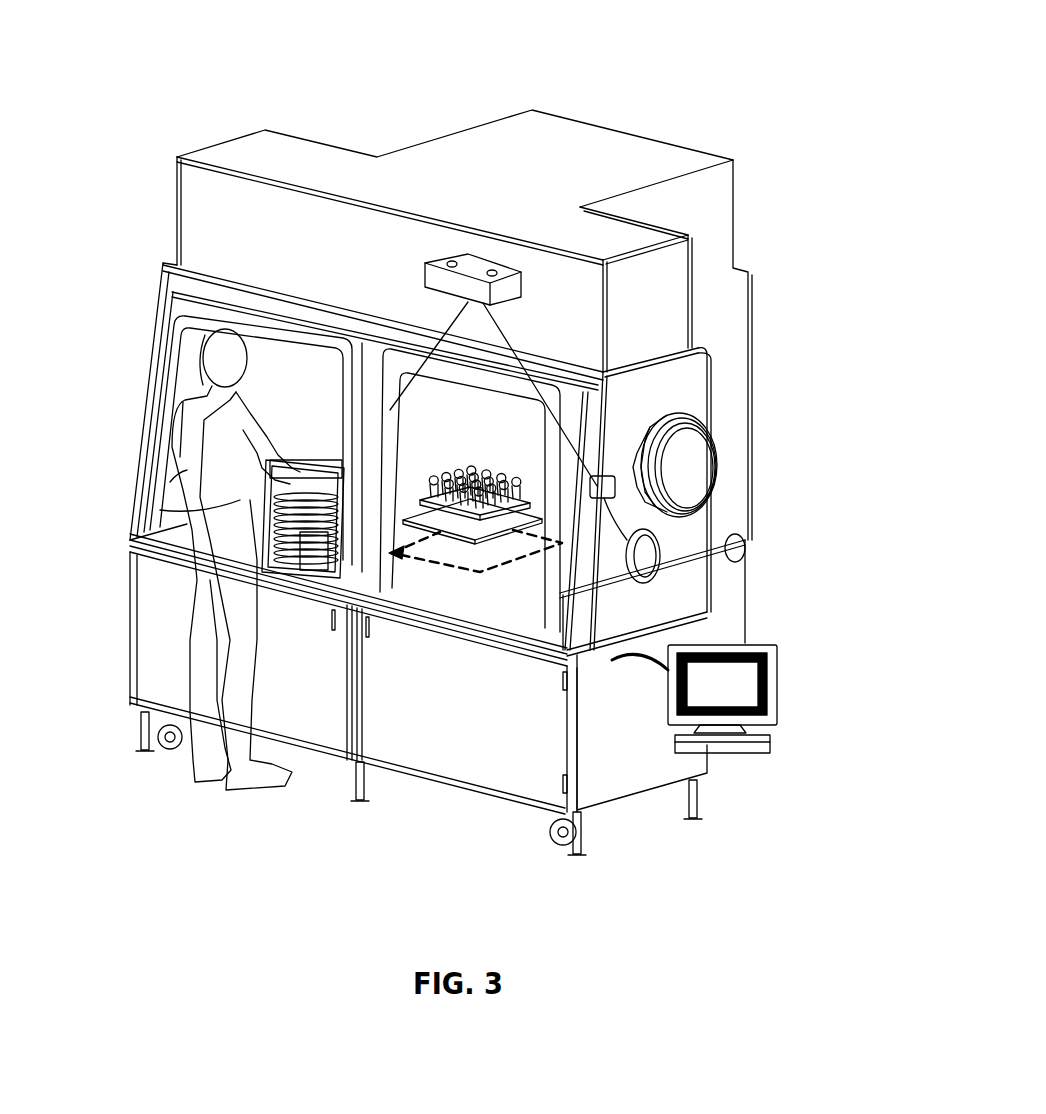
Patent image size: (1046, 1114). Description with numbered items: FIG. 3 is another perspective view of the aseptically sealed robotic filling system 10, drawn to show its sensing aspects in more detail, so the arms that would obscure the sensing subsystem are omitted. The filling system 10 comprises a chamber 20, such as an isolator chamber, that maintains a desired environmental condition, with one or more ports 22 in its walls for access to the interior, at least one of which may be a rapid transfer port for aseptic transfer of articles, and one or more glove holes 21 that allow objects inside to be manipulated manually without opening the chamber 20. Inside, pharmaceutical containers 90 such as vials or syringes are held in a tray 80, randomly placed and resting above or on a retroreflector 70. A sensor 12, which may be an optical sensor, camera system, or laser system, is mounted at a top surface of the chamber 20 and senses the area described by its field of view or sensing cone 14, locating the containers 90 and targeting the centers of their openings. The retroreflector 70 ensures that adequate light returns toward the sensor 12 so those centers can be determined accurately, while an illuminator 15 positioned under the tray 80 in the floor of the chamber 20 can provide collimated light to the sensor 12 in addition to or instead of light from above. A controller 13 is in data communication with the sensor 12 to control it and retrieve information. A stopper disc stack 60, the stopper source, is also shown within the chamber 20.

The robotic filling system 10 is at (738, 114).
The sensor 12 is at (455, 258).
The controller 13 is at (725, 752).
The sensing cone 14 is at (613, 543).
The illuminator 15 is at (453, 550).
The chamber 20 is at (685, 382).
The glove holes 21 is at (187, 470).
The port 22 is at (693, 458).
The stopper disc stack 60 is at (270, 487).
The retroreflector 70 is at (503, 537).
The tray 80 is at (413, 498).
The containers 90 is at (465, 480).